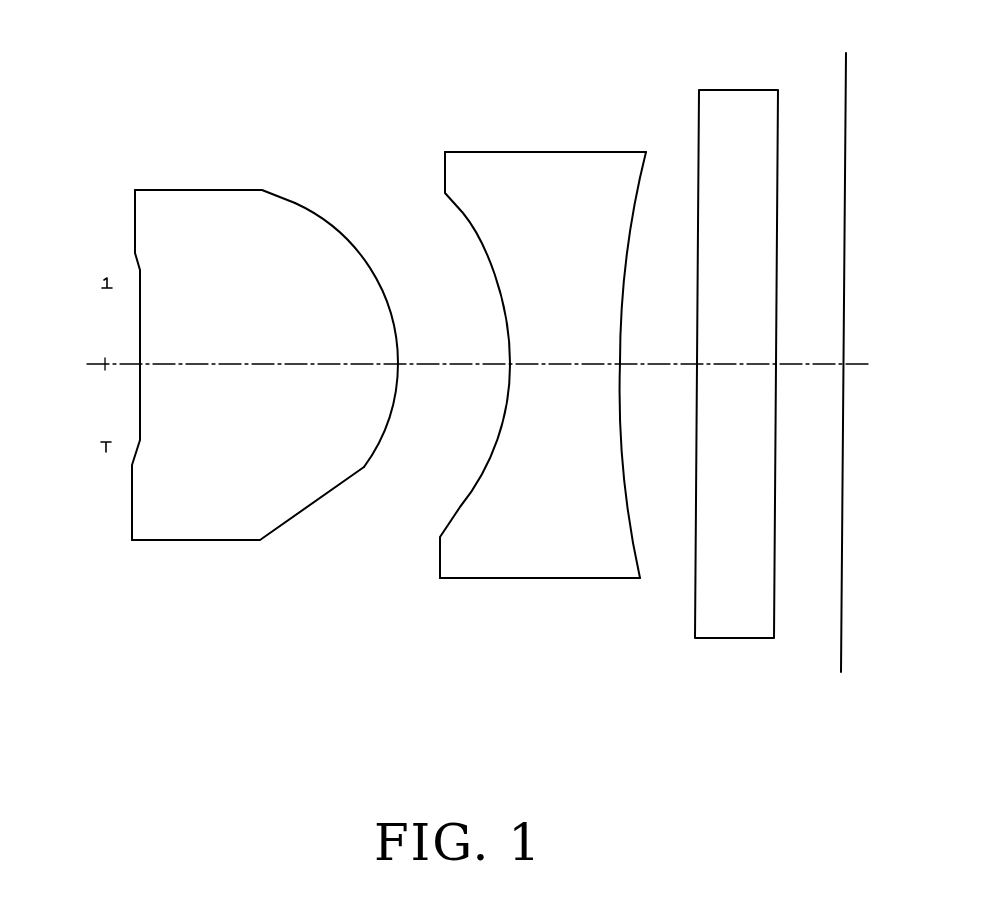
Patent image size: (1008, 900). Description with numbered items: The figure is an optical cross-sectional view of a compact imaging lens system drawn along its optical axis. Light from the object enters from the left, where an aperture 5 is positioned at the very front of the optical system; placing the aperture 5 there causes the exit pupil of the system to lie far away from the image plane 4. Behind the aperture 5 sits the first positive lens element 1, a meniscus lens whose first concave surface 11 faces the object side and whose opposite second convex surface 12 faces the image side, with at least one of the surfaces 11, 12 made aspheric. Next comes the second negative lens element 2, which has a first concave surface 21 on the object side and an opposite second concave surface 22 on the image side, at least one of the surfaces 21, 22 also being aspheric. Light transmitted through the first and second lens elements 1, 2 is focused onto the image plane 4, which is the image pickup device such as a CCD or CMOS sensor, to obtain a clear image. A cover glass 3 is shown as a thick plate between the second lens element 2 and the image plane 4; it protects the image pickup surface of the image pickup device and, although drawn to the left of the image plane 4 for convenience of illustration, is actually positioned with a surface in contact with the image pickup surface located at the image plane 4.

The first positive lens element 1 is at (240, 367).
The second negative lens element 2 is at (534, 348).
The cover glass 3 is at (735, 108).
The image plane 4 is at (846, 118).
The aperture 5 is at (104, 281).
The first concave surface 11 is at (140, 405).
The second convex surface 12 is at (362, 467).
The first concave surface 21 is at (487, 463).
The second concave surface 22 is at (625, 470).